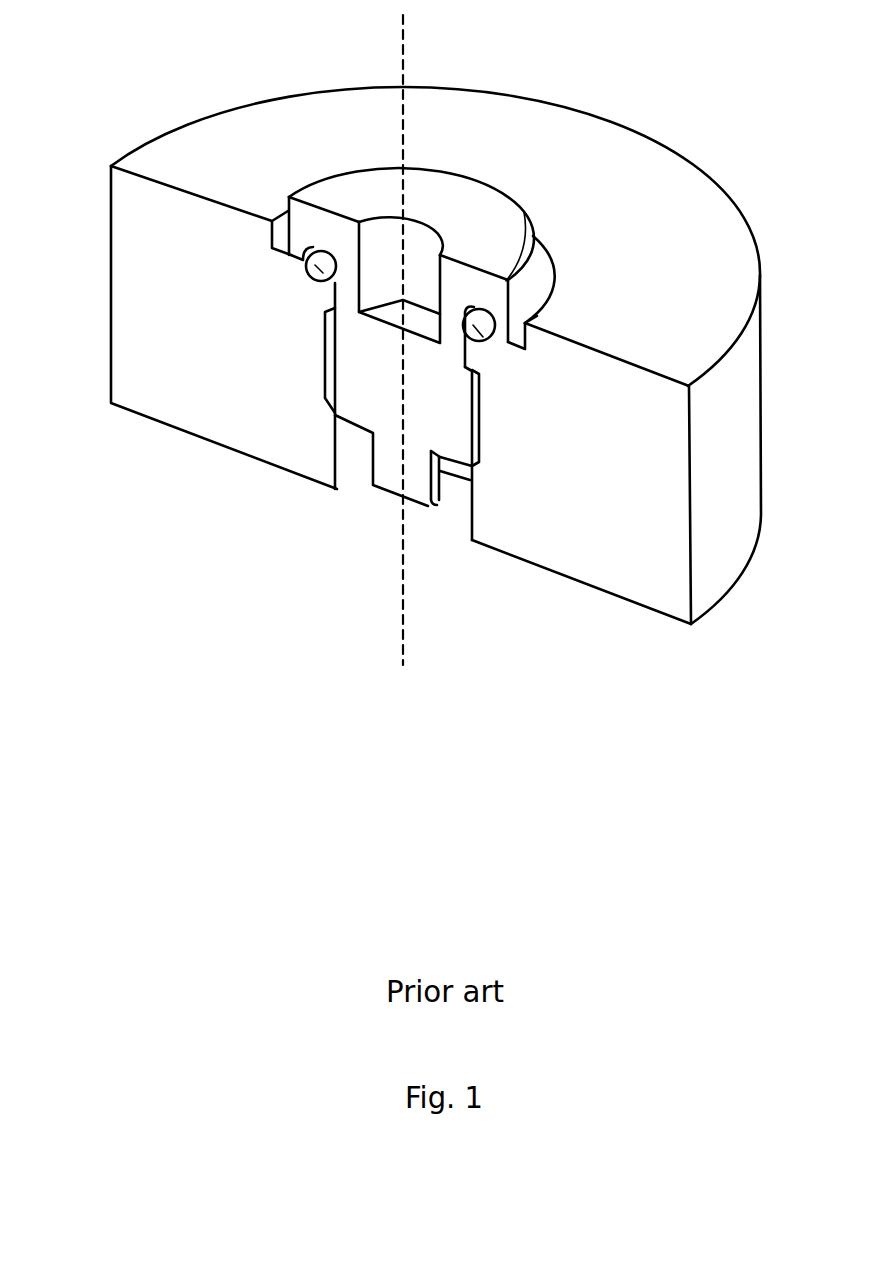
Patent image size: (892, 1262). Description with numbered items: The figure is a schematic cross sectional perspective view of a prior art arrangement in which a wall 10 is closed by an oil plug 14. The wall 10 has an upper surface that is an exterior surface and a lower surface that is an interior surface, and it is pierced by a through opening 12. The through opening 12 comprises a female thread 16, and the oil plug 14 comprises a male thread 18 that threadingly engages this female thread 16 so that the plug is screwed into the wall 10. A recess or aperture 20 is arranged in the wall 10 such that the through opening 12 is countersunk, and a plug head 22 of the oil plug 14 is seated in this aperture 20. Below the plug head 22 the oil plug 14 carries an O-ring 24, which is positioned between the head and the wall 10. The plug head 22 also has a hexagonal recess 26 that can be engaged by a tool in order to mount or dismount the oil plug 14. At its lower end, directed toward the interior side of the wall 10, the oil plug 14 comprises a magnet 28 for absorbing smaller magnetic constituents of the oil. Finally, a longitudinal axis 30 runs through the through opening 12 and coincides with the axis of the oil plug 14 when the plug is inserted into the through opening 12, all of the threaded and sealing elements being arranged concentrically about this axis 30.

The wall 10 is at (293, 123).
The through opening 12 is at (355, 460).
The oil plug 14 is at (380, 182).
The female thread 16 is at (330, 440).
The male thread 18 is at (327, 383).
The aperture 20 is at (540, 275).
The plug head 22 is at (470, 205).
The O-ring 24 is at (320, 270).
The hexagonal recess 26 is at (420, 240).
The magnet 28 is at (417, 483).
The longitudinal axis 30 is at (403, 590).